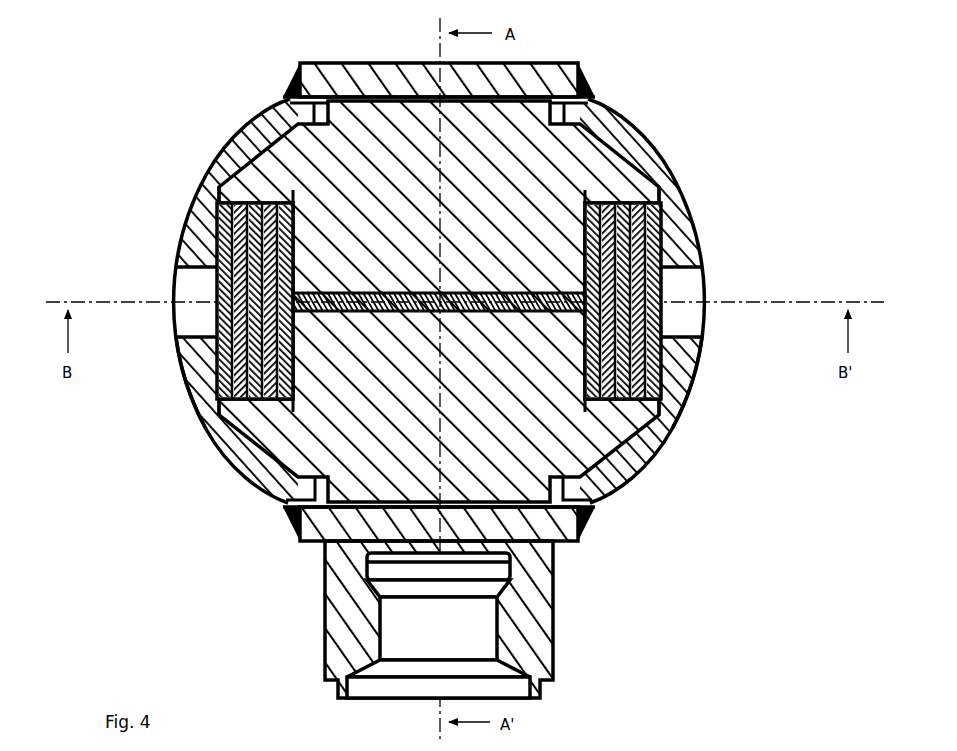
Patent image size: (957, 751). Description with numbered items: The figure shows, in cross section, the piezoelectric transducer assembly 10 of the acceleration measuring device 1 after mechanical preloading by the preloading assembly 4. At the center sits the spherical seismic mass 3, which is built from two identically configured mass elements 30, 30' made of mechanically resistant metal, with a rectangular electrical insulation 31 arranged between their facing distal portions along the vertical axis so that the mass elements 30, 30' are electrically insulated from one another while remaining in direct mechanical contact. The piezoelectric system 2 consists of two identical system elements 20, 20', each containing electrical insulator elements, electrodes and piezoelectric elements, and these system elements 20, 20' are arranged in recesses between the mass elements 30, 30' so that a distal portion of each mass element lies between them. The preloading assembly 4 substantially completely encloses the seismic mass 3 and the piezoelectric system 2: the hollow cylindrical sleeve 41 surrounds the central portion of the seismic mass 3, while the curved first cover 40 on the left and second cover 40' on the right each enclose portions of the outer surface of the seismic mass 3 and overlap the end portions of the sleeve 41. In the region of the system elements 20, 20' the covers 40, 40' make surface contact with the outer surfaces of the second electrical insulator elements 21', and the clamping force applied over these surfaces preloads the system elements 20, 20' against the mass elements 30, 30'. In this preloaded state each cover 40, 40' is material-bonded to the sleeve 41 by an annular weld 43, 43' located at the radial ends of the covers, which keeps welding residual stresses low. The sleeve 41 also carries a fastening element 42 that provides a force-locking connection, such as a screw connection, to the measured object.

The acceleration measuring device 1 is at (176, 60).
The piezoelectric transducer assembly 10 is at (449, 368).
The piezoelectric system 2 is at (106, 383).
The first system element 20 is at (158, 383).
The second system element 20' is at (406, 387).
The second electrical insulator element 21' is at (434, 303).
The seismic mass 3 is at (106, 143).
The first mass element 30 is at (385, 281).
The second mass element 30' is at (385, 301).
The electrical insulation 31 is at (240, 238).
The preloading assembly 4 is at (783, 121).
The first cover 40 is at (483, 301).
The second cover 40' is at (542, 192).
The sleeve 41 is at (562, 73).
The fastening element 42 is at (556, 636).
The annular weld 43 is at (505, 301).
The annular weld 43' is at (540, 456).